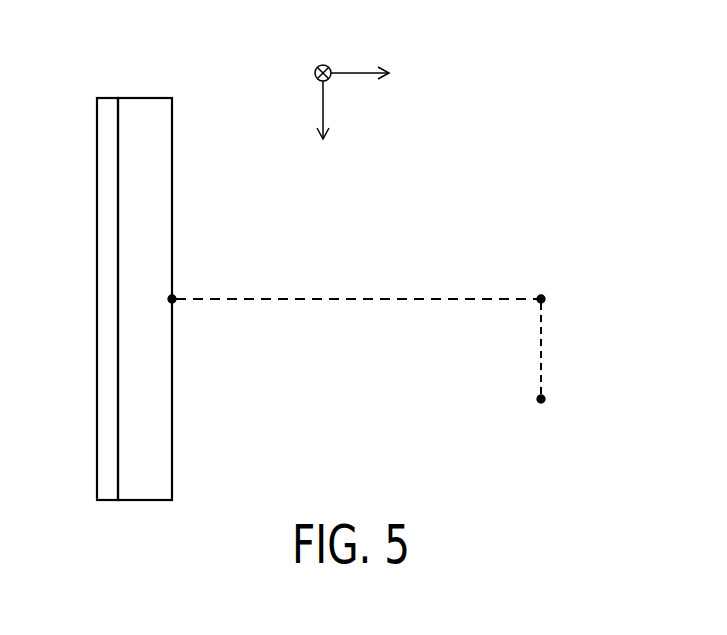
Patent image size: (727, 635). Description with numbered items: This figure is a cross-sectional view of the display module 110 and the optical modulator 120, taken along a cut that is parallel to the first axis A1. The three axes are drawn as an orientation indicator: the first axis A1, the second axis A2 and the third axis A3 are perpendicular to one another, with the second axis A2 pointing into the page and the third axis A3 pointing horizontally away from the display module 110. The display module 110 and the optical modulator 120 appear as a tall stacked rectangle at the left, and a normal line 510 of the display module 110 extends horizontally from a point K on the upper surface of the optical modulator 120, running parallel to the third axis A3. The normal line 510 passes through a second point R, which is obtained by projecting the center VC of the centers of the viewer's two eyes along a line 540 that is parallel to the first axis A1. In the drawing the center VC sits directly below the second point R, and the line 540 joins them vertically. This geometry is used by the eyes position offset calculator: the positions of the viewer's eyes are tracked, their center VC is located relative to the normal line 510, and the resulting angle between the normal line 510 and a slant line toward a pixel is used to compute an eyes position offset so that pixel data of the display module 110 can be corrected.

The display module 110 is at (108, 98).
The optical modulator 120 is at (148, 98).
The normal line 510 is at (355, 299).
The line 540 is at (544, 348).
The point K is at (183, 285).
The second point R is at (551, 285).
The center of the centers of the viewer's eyes VC is at (542, 416).
The first axis A1 is at (322, 128).
The second axis A2 is at (317, 67).
The third axis A3 is at (376, 75).